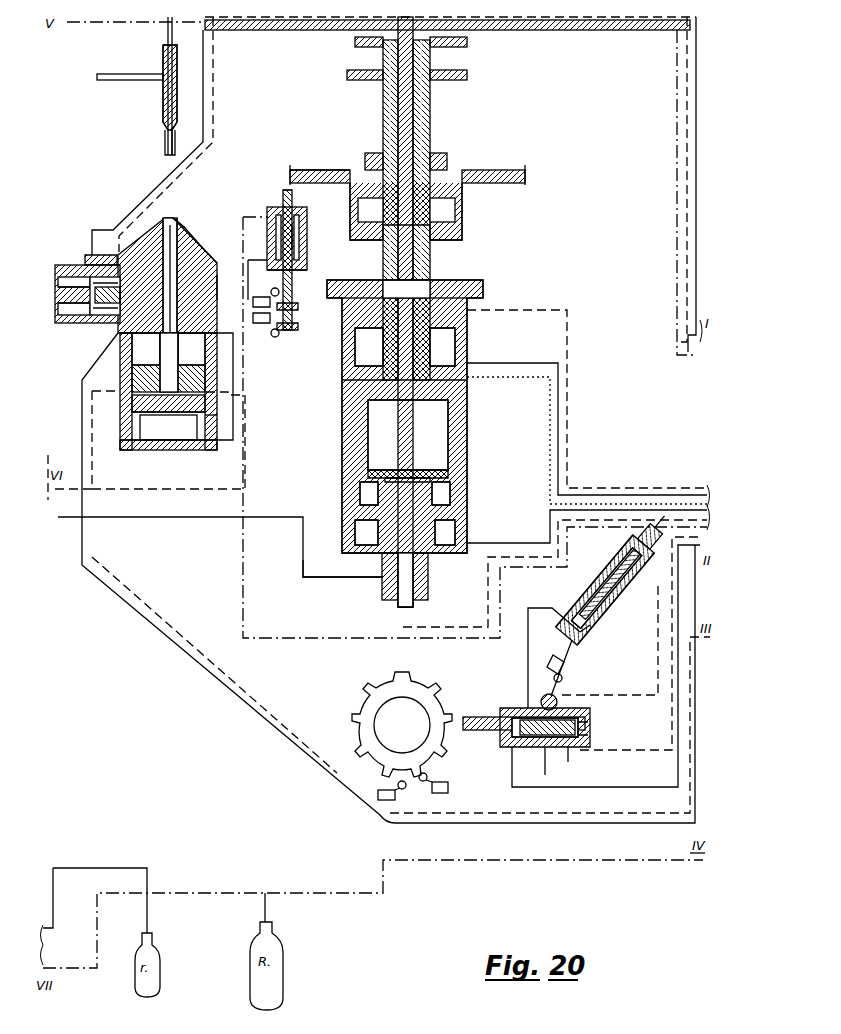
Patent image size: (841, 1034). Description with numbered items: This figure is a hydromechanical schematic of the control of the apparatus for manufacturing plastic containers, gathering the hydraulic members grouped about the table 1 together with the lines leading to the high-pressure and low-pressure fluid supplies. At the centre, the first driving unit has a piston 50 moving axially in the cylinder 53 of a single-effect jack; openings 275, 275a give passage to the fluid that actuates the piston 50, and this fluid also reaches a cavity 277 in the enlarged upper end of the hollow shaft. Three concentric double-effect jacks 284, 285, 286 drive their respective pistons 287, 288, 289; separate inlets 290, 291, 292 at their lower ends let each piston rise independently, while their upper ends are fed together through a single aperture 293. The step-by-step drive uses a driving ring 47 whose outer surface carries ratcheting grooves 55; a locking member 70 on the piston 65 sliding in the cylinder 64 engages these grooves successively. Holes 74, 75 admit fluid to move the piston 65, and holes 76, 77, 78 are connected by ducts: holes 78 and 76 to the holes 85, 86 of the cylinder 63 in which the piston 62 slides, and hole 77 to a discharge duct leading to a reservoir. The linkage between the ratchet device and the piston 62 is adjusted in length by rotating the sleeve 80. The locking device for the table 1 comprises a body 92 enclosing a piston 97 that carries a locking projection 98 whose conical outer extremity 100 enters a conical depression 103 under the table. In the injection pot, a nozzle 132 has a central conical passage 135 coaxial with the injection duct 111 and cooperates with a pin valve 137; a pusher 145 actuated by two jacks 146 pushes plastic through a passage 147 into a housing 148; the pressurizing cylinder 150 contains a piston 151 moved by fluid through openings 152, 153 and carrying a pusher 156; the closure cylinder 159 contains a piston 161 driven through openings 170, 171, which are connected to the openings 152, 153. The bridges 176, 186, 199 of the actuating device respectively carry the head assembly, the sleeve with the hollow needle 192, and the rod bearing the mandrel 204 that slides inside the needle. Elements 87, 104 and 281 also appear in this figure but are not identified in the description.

The table 1 is at (525, 172).
The driving ring 47 is at (420, 690).
The piston 50 is at (455, 330).
The cylinder 53 is at (455, 350).
The ratching grooves 55 is at (482, 718).
The piston 62 is at (594, 581).
The cylinder 63 is at (615, 599).
The cylinder 64 is at (505, 712).
The piston 65 is at (568, 758).
The locking member 70 is at (500, 735).
The hole 74 is at (641, 645).
The hole 75 is at (512, 775).
The hole 76 is at (528, 682).
The hole 77 is at (537, 764).
The hole 78 is at (610, 640).
The sleeve 80 is at (572, 672).
The hole 85 is at (654, 530).
The hole 86 is at (570, 630).
The piston 87 is at (605, 590).
The body 92 is at (300, 244).
The piston 97 is at (270, 250).
The locking projection 98 is at (294, 203).
The outer extremity 100 is at (283, 196).
The conical shaped depression 103 is at (300, 170).
The valve seat 104 is at (300, 262).
The injection duct 111 is at (223, 249).
The nozzle 132 is at (168, 218).
The central conical passage 135 is at (180, 222).
The pin valve 137 is at (207, 233).
The pusher 145 is at (72, 318).
The jacks 146 is at (80, 350).
The passage 147 is at (120, 342).
The housing 148 is at (148, 349).
The cylinder 150 is at (196, 349).
The piston 151 is at (132, 380).
The opening 152 is at (82, 385).
The opening 153 is at (92, 440).
The pusher 156 is at (232, 287).
The cylinder 159 is at (185, 445).
The piston 161 is at (132, 442).
The opening 170 is at (217, 445).
The opening 171 is at (236, 400).
The bridge 176 is at (470, 77).
The second bridge 186 is at (357, 42).
The hollow needle 192 is at (166, 140).
The bridge 199 is at (556, 30).
The mandrel 204 is at (166, 36).
The opening 275 is at (525, 362).
The opening 275a is at (573, 300).
The cavity 277 is at (452, 218).
The bearing 281 is at (442, 155).
The double effect jack 284 is at (435, 565).
The double effect jack 285 is at (450, 492).
The double effect jack 286 is at (448, 420).
The piston 287 is at (455, 525).
The piston 288 is at (445, 480).
The piston 289 is at (450, 472).
The inlet 290 is at (587, 526).
The inlet 291 is at (335, 580).
The inlet 292 is at (400, 612).
The aperture 293 is at (550, 396).